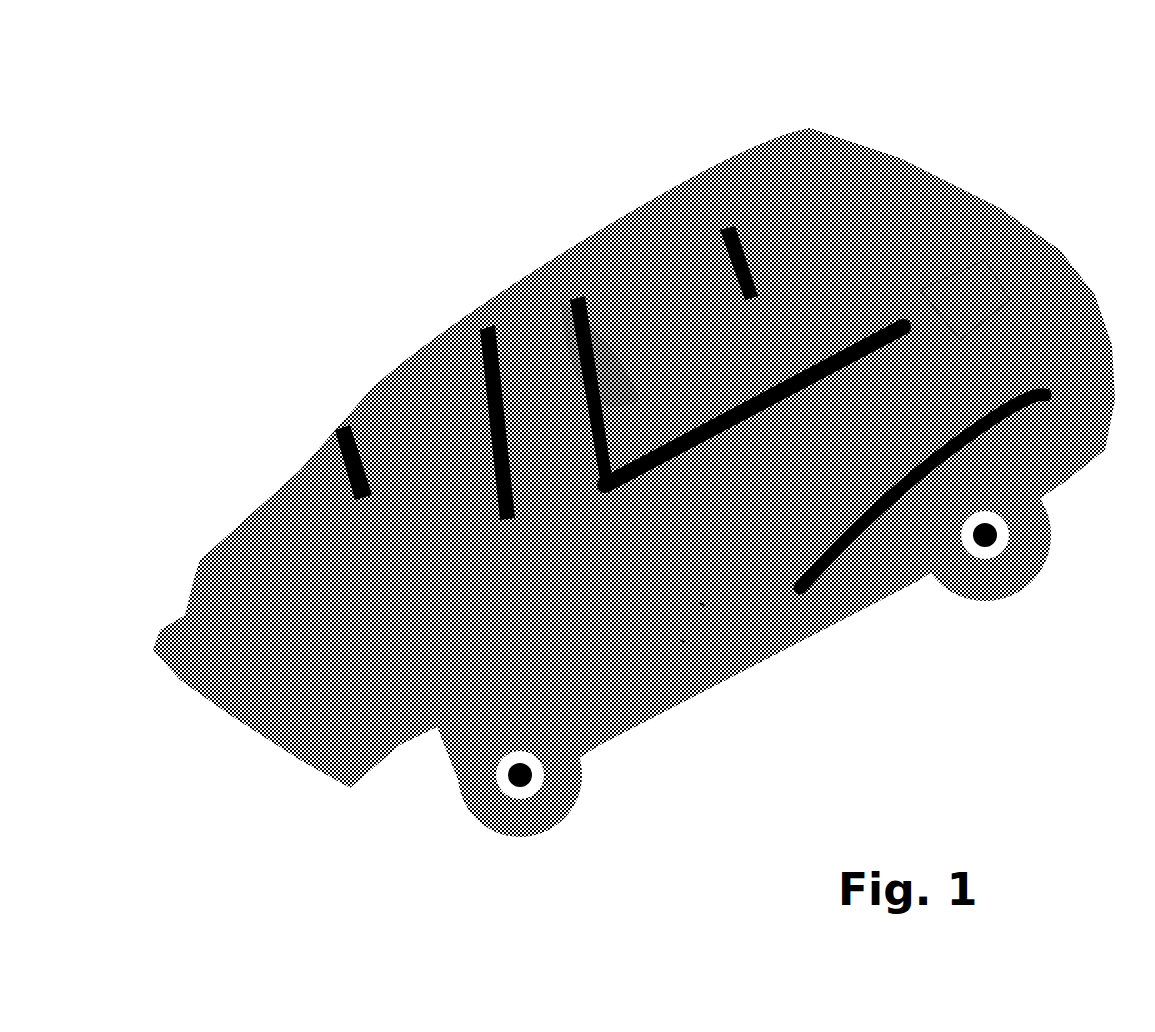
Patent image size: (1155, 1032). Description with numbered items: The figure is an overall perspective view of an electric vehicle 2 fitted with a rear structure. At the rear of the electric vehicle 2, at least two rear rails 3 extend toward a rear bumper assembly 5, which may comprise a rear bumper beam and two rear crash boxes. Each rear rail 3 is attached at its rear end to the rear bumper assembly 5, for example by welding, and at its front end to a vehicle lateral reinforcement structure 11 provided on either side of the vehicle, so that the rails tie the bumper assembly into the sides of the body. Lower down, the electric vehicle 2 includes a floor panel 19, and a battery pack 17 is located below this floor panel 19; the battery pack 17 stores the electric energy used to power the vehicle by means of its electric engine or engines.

The electric vehicle 2 is at (265, 222).
The rear rail 3 is at (840, 356).
The rear bumper assembly 5 is at (963, 320).
The vehicle lateral reinforcement structure 11 is at (630, 372).
The battery pack 17 is at (680, 640).
The floor panel 19 is at (700, 603).